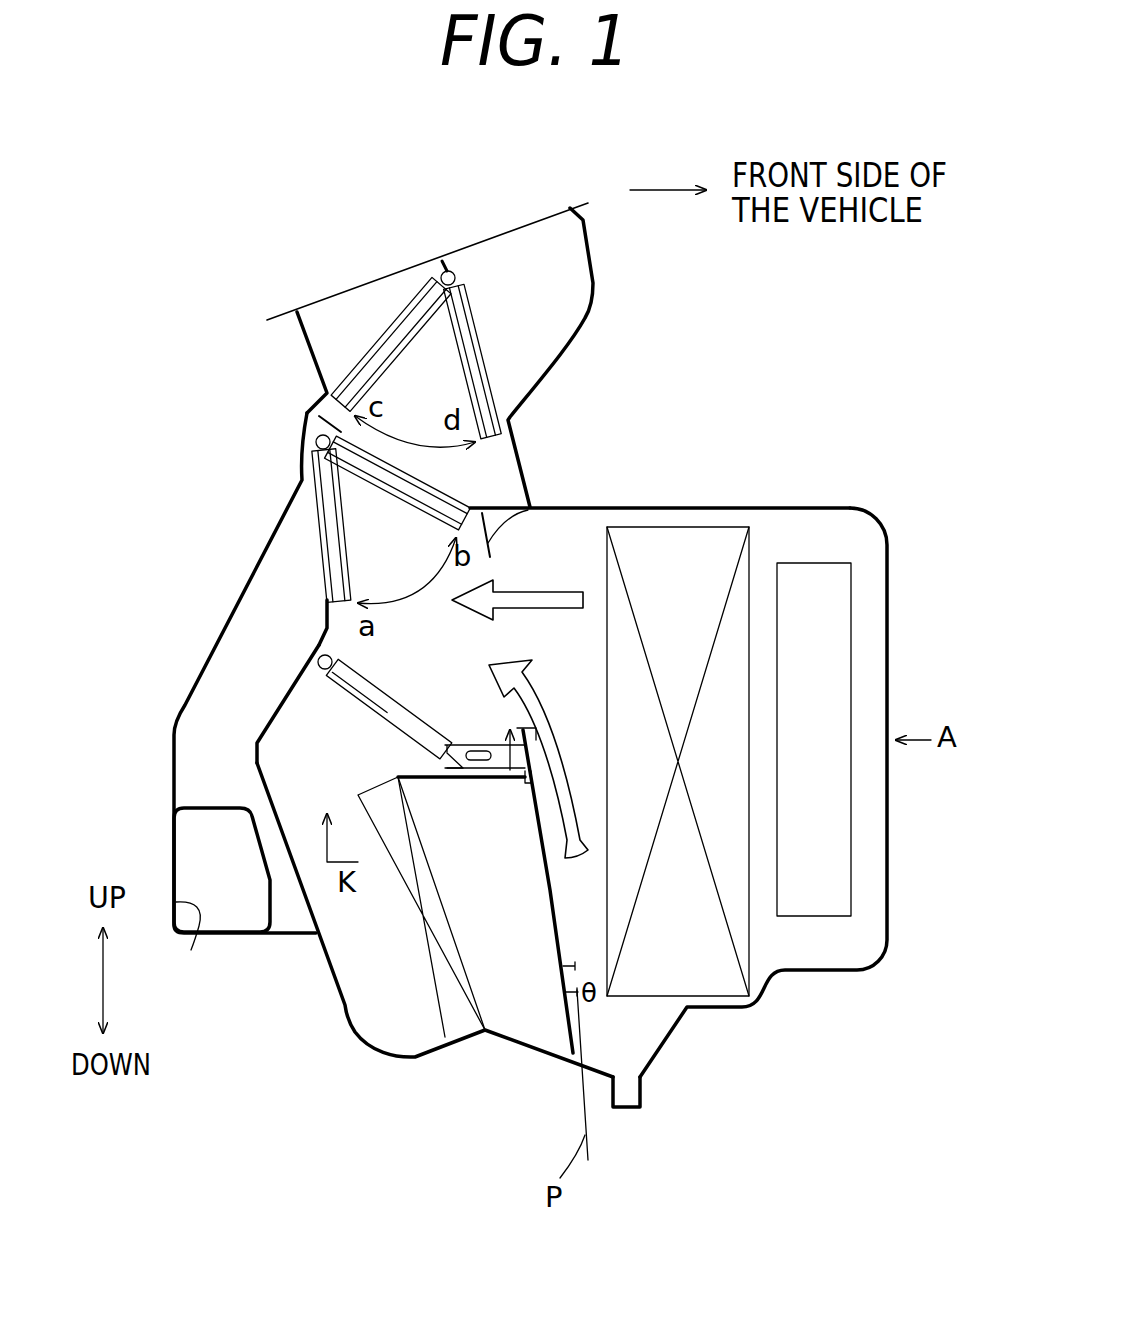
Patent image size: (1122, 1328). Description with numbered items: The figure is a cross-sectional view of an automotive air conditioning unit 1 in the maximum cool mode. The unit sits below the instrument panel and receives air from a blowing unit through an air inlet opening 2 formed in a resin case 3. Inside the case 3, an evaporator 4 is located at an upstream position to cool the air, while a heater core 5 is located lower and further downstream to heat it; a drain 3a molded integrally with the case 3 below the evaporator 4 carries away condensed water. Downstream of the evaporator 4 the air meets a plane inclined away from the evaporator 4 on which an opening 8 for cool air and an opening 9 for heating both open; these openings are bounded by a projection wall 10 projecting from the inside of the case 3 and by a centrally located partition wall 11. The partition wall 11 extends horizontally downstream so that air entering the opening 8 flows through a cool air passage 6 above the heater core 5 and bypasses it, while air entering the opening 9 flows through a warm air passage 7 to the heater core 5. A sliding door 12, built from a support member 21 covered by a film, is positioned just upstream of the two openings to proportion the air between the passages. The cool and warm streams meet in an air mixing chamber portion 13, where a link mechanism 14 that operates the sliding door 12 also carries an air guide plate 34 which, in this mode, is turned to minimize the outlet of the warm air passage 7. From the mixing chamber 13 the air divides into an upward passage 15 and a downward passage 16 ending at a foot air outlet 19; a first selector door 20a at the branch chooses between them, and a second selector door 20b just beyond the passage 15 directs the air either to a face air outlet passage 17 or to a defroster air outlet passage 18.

The air conditioning unit 1 is at (762, 500).
The air inlet opening 2 is at (860, 590).
The case 3 is at (817, 510).
The drain 3a is at (627, 1100).
The evaporator 4 is at (685, 540).
The heater core 5 is at (398, 895).
The cool air passage 6 is at (533, 623).
The warm air passage 7 is at (483, 907).
The opening for cool air 8 is at (497, 583).
The opening for heating 9 is at (507, 807).
The projection wall 10 is at (522, 505).
The partition wall 11 is at (398, 655).
The sliding door 12 is at (556, 892).
The air mixing chamber portion 13 is at (350, 648).
The link mechanism 14 is at (393, 752).
The air outlet passage 15 is at (422, 358).
The air outlet passage 16 is at (560, 358).
The face air outlet passage 17 is at (332, 313).
The defroster air outlet passage 18 is at (510, 250).
The foot air outlet 19 is at (191, 950).
The first selector door 20a is at (318, 512).
The second selector door 20b is at (355, 367).
The support member 21 is at (556, 958).
The air guide plate 34 is at (400, 715).